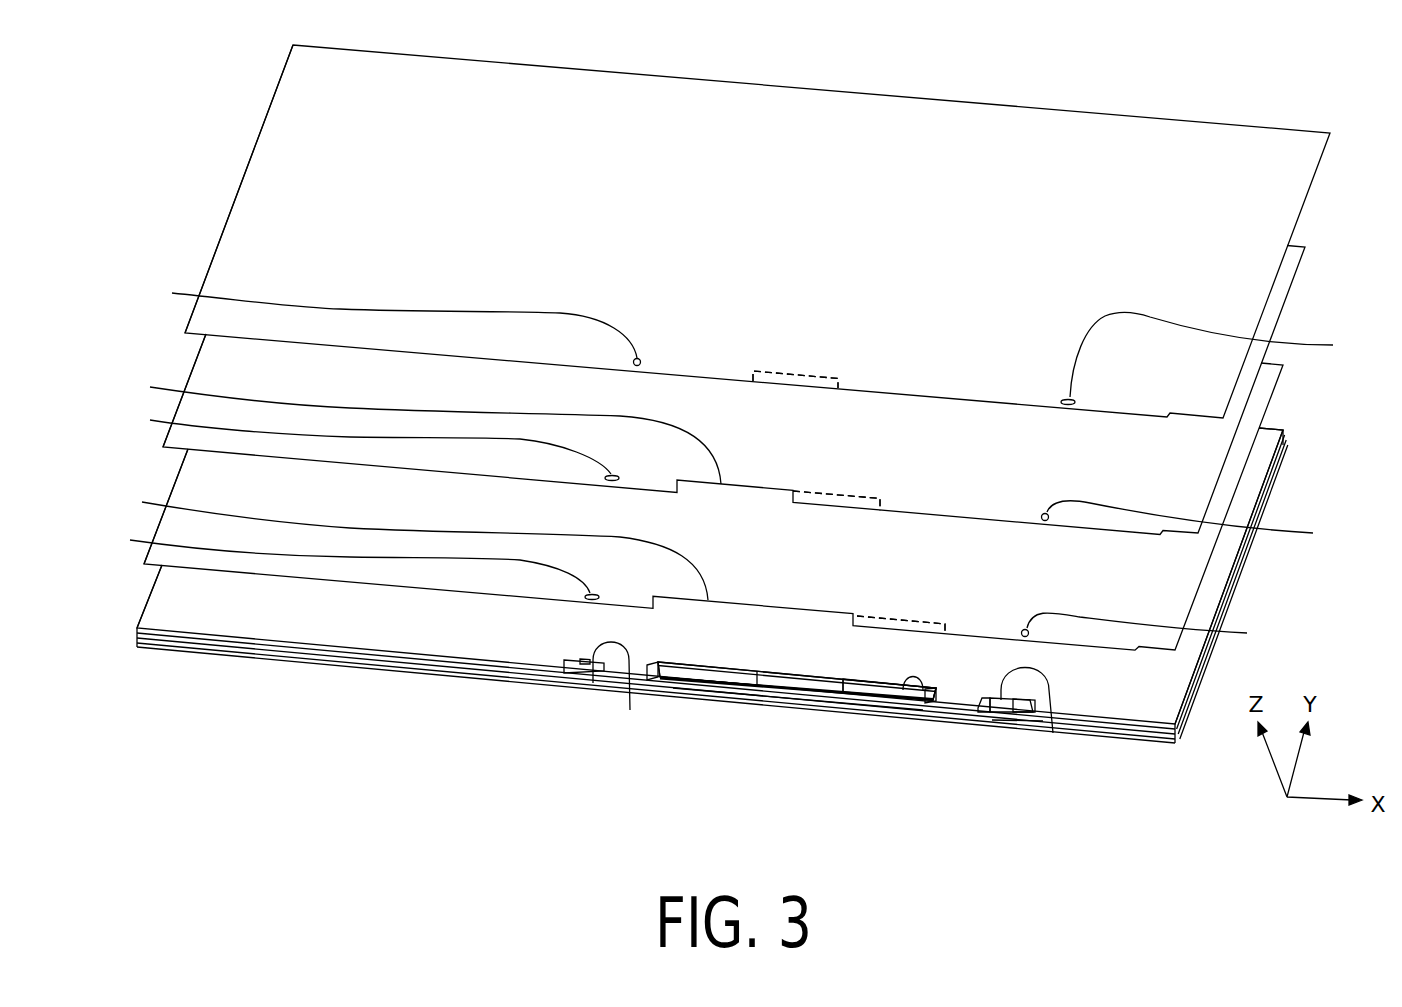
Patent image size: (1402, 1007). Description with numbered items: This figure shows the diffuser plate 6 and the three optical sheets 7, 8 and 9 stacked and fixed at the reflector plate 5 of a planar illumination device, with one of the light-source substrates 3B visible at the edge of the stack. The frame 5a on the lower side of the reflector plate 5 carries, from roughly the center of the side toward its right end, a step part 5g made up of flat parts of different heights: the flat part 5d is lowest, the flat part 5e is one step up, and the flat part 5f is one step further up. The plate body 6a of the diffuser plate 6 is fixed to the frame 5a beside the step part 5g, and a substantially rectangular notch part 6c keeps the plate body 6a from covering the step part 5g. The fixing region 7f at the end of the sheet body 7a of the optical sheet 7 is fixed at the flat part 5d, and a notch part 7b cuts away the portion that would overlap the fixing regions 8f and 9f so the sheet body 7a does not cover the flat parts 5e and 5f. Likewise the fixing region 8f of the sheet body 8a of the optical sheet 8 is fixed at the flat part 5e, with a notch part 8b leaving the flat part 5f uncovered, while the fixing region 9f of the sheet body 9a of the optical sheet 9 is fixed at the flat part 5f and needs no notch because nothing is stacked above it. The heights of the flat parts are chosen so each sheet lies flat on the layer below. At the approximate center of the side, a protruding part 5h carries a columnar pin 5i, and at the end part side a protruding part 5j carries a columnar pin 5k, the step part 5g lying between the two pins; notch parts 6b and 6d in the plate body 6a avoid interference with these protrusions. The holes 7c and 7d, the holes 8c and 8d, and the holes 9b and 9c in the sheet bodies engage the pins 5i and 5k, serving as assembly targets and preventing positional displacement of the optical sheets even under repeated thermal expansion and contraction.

The optical sheet 9 is at (1300, 170).
The sheet body 9a is at (255, 220).
The hole 9b is at (389, 324).
The hole 9c is at (1210, 358).
The fixing region 9f is at (795, 374).
The optical sheet 8 is at (1283, 272).
The sheet body 8a is at (237, 355).
The notch part 8b is at (423, 427).
The hole 8c is at (369, 444).
The hole 8d is at (1194, 523).
The fixing region 8f is at (852, 494).
The optical sheet 7 is at (1263, 391).
The sheet body 7a is at (232, 470).
The notch part 7b is at (411, 545).
The hole 7c is at (350, 564).
The hole 7d is at (1150, 630).
The fixing region 7f is at (917, 618).
The diffuser plate 6 is at (1245, 497).
The plate body 6a is at (182, 598).
The notch part 6b is at (620, 660).
The notch part 6c is at (910, 690).
The notch part 6d is at (1051, 725).
The reflector plate 5 is at (1283, 431).
The substrate 3B is at (1285, 462).
The frame 5a is at (663, 683).
The flat part 5d is at (878, 690).
The flat part 5e is at (790, 682).
The flat part 5f is at (712, 675).
The step part 5g is at (710, 770).
The protruding part 5h is at (566, 674).
The pin 5i is at (585, 675).
The protruding part 5j is at (989, 714).
The pin 5k is at (1018, 712).